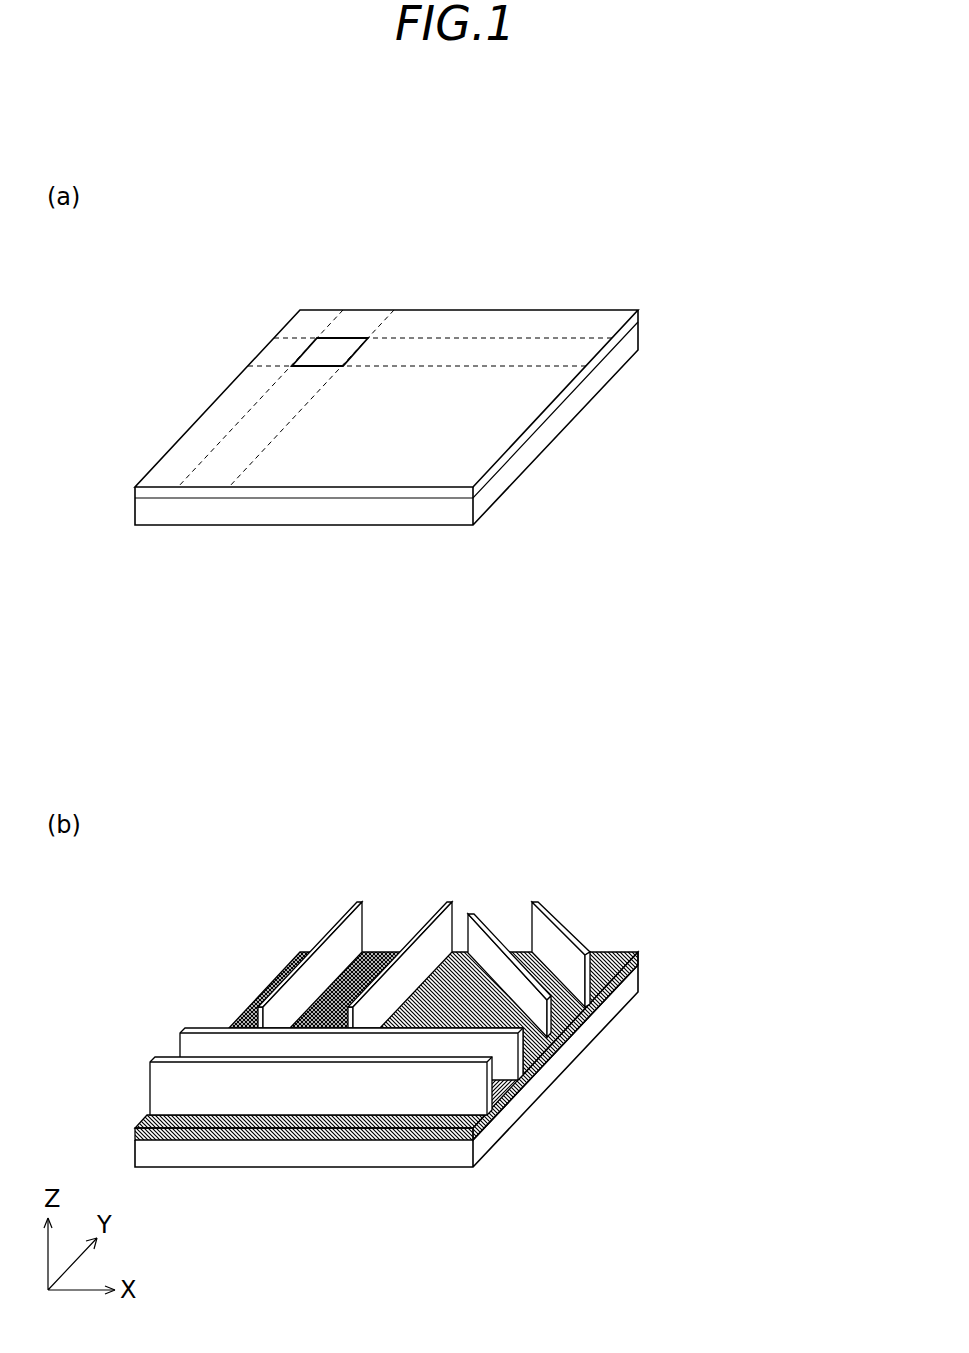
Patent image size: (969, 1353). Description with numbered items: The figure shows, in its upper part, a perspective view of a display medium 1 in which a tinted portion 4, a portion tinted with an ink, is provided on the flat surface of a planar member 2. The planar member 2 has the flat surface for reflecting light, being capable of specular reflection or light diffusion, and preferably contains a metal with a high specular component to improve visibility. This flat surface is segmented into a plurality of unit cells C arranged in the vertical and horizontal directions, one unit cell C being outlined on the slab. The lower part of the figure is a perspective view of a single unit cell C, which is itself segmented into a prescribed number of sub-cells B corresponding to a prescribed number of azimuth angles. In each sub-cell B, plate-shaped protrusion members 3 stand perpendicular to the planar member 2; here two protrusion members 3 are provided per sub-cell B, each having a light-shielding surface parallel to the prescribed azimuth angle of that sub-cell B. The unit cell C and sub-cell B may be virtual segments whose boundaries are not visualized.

The display medium 1 is at (553, 263).
The planar member 2 is at (523, 452).
The protrusion member 3 is at (565, 920).
The tinted portion 4 is at (548, 393).
The sub-cell B is at (377, 952).
The unit cell C is at (337, 350).